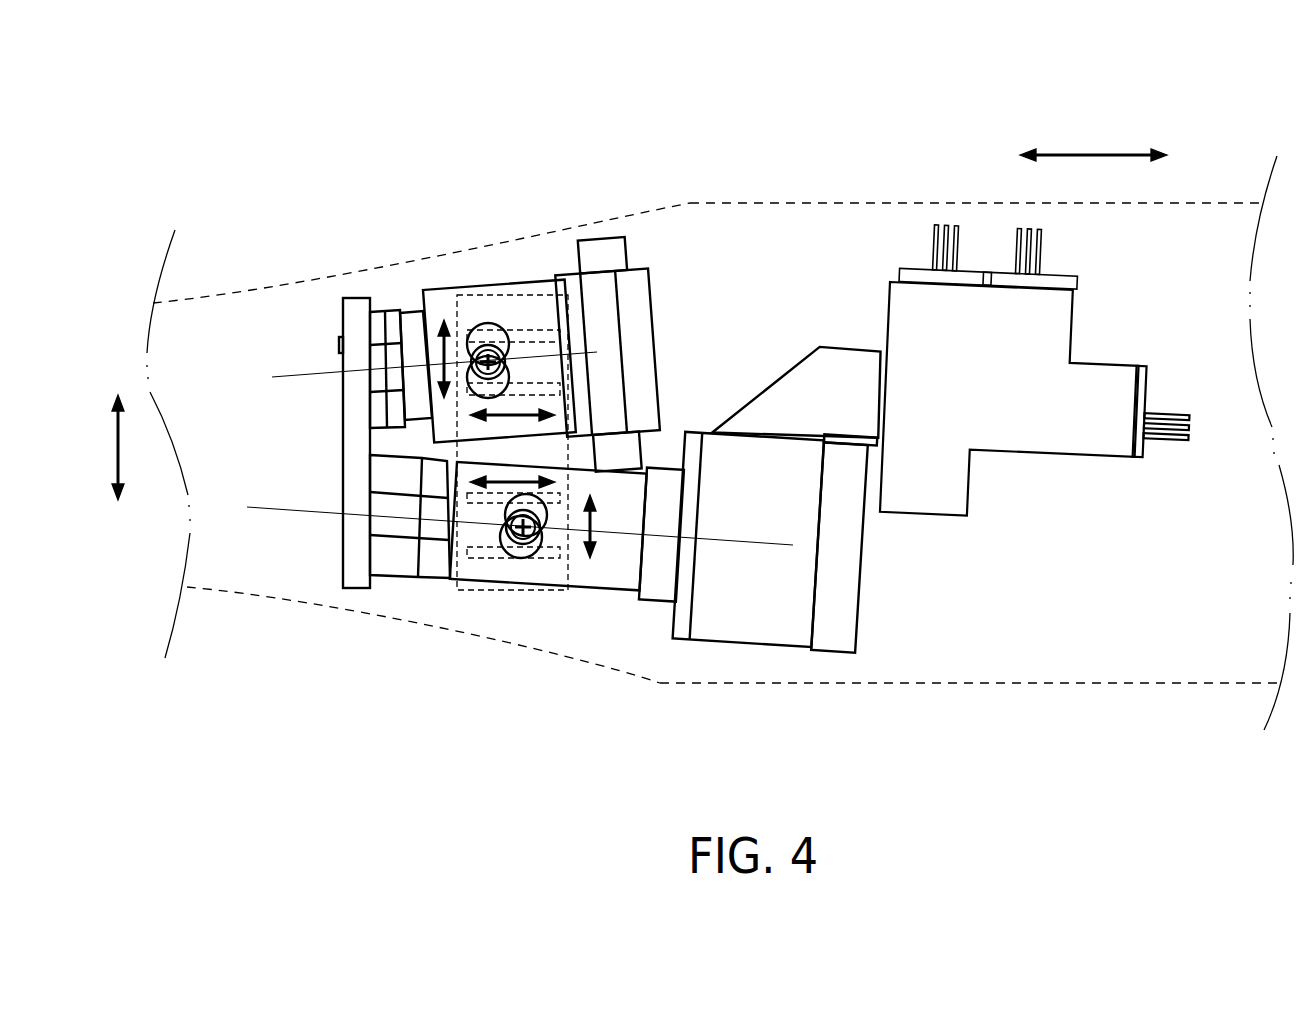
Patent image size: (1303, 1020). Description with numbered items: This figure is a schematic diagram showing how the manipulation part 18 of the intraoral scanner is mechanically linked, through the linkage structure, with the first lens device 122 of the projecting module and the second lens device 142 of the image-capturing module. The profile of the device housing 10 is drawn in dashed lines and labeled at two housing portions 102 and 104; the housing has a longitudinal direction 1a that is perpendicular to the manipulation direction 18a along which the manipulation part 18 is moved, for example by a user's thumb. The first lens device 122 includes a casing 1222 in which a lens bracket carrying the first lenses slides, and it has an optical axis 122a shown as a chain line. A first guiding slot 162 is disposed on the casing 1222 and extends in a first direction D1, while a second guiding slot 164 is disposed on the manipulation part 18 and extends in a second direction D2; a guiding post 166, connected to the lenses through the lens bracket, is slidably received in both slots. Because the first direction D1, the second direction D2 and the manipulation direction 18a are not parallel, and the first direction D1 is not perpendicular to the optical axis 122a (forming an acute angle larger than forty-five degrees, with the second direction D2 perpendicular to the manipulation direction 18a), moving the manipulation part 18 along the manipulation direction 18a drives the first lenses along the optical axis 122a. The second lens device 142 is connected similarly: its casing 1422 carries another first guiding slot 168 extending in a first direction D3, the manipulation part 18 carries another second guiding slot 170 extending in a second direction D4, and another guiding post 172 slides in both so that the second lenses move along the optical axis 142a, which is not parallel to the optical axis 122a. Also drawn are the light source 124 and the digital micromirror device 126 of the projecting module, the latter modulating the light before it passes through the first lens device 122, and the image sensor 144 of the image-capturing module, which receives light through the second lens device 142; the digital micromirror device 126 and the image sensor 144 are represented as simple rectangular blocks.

The device housing 10 is at (666, 401).
The first housing portion 102 is at (227, 293).
The second housing portion 104 is at (850, 203).
The longitudinal direction 1a is at (1093, 141).
The manipulation part 18 is at (513, 595).
The manipulation direction 18a is at (93, 447).
The first lens device 122 is at (712, 525).
The casing 1222 is at (574, 635).
The optical axis 122a is at (292, 512).
The light source 124 is at (1055, 433).
The digital micromirror device 126 is at (850, 570).
The second lens device 142 is at (490, 346).
The casing 1422 is at (440, 290).
The optical axis 142a is at (303, 372).
The image sensor 144 is at (648, 320).
The first guiding slot 162 is at (490, 616).
The second guiding slot 164 is at (473, 556).
The guiding post 166 is at (540, 557).
The first guiding slot 168 is at (487, 327).
The second guiding slot 170 is at (502, 340).
The guiding post 172 is at (540, 336).
The first direction D1 is at (612, 526).
The second direction D2 is at (500, 478).
The first direction D3 is at (440, 347).
The second direction D4 is at (510, 418).